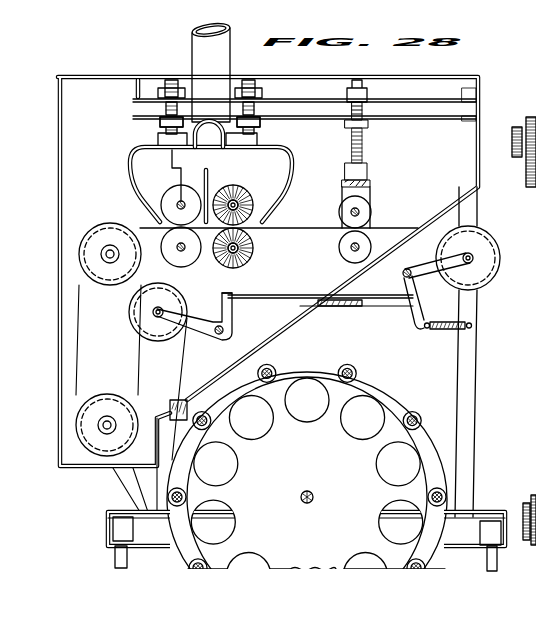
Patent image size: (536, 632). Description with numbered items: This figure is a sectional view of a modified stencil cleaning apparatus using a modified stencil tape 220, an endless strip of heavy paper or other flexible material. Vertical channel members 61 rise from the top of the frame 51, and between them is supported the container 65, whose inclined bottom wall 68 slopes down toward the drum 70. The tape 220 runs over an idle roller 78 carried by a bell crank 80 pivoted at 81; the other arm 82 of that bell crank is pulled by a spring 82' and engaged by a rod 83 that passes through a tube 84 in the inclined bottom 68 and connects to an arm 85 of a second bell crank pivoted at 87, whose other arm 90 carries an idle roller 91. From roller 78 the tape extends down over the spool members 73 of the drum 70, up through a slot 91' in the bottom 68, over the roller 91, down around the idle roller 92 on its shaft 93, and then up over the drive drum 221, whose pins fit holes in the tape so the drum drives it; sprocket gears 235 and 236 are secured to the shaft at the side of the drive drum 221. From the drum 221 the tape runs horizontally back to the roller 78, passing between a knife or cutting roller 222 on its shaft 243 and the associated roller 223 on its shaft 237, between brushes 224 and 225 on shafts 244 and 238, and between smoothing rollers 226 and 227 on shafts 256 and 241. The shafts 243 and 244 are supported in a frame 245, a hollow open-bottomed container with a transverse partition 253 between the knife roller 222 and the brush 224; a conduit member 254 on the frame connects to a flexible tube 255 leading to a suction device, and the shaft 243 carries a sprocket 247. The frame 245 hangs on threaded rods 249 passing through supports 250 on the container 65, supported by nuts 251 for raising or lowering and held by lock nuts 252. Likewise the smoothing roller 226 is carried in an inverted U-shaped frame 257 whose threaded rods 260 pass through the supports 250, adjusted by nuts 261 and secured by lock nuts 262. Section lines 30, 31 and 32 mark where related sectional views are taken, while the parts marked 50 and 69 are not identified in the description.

The section line 30 is at (110, 322).
The section line 31 is at (181, 268).
The section line 32 is at (356, 322).
The leg 50 is at (114, 556).
The frame 51 is at (108, 528).
The vertical channel members 61 is at (474, 434).
The container 65 is at (410, 78).
The inclined bottom wall 68 is at (285, 322).
The central hub bolt 69 is at (305, 492).
The drum 70 is at (388, 383).
The spool members 73 is at (352, 370).
The idle roller 78 is at (490, 259).
The bell crank 80 is at (428, 265).
The pivot 81 is at (405, 271).
The arm 82 is at (408, 302).
The spring 82' is at (448, 334).
The rod 83 is at (275, 295).
The tube 84 is at (352, 308).
The arm 85 is at (232, 306).
The pivot 87 is at (224, 330).
The arm 90 is at (209, 320).
The roller 91 is at (158, 321).
The slots 91' is at (172, 389).
The roller 92 is at (95, 405).
The shaft 93 is at (108, 416).
The stencil tape 220 is at (478, 300).
The drive drum 221 is at (75, 250).
The cutting roller 222 is at (175, 190).
The associated roller 223 is at (193, 258).
The brush 224 is at (236, 200).
The brush 225 is at (253, 246).
The smoothing roller 226 is at (371, 216).
The smoothing roller 227 is at (341, 243).
The sprocket gear 235 is at (514, 126).
The sprocket gear 236 is at (528, 188).
The shaft 237 is at (178, 250).
The shaft 238 is at (243, 266).
The shaft 241 is at (347, 251).
The shaft 243 is at (177, 203).
The shaft 244 is at (238, 206).
The frame 245 is at (283, 160).
The sprocket 247 is at (527, 502).
The threaded rods 249 is at (166, 80).
The supports 250 is at (410, 118).
The nuts 251 is at (160, 99).
The lock nuts 252 is at (160, 122).
The transverse partition 253 is at (207, 170).
The conduit member 254 is at (220, 82).
The flexible tube 255 is at (196, 32).
The shaft 256 is at (360, 210).
The inverted U-shaped frame 257 is at (371, 176).
The threaded rods 260 is at (363, 152).
The nuts 261 is at (367, 96).
The lock nuts 262 is at (368, 125).